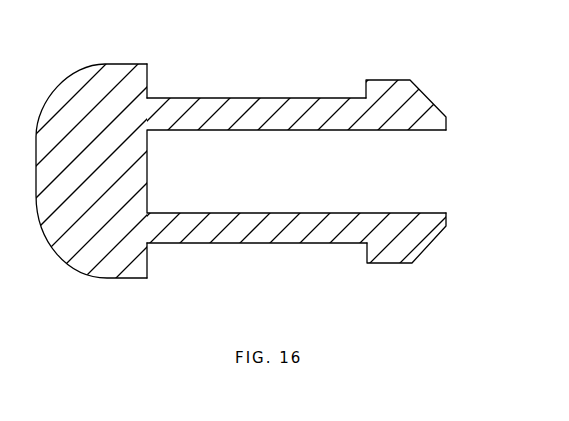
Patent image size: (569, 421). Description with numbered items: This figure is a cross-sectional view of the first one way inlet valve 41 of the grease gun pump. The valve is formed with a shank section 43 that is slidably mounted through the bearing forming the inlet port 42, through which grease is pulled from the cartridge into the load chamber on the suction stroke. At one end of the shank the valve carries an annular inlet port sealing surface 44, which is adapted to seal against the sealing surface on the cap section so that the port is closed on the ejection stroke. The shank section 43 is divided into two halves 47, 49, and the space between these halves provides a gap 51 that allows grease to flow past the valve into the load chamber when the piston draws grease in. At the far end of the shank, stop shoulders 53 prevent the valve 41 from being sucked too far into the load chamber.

The first one way inlet valve 41 is at (281, 76).
The inlet port 42 is at (444, 149).
The shank section 43 is at (248, 243).
The annular inlet port sealing surface 44 is at (147, 75).
The first half of shank section 47 is at (215, 98).
The second half of shank section 49 is at (293, 243).
The gap 51 is at (375, 147).
The stop shoulders 53 is at (366, 97).